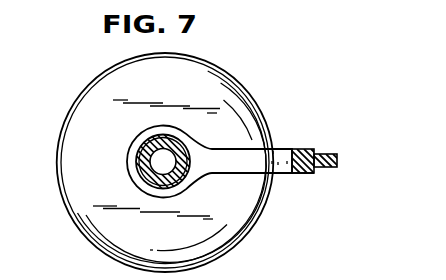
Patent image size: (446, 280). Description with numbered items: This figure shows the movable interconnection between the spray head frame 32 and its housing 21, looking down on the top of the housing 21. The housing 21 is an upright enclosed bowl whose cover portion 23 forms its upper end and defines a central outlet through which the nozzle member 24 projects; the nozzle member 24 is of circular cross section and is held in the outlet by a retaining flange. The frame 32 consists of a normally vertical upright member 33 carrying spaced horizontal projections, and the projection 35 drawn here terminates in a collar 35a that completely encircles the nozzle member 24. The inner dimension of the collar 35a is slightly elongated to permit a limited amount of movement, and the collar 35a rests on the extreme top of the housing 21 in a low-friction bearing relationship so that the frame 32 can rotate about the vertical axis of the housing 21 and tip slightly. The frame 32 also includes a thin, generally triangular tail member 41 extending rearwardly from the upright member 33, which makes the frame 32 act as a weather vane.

The housing 21 is at (57, 197).
The cover portion 23 is at (68, 159).
The nozzle member 24 is at (146, 168).
The collar 35a is at (135, 140).
The projection 35 is at (243, 163).
The frame 32 is at (309, 148).
The tail member 41 is at (337, 159).
The upright member 33 is at (310, 173).